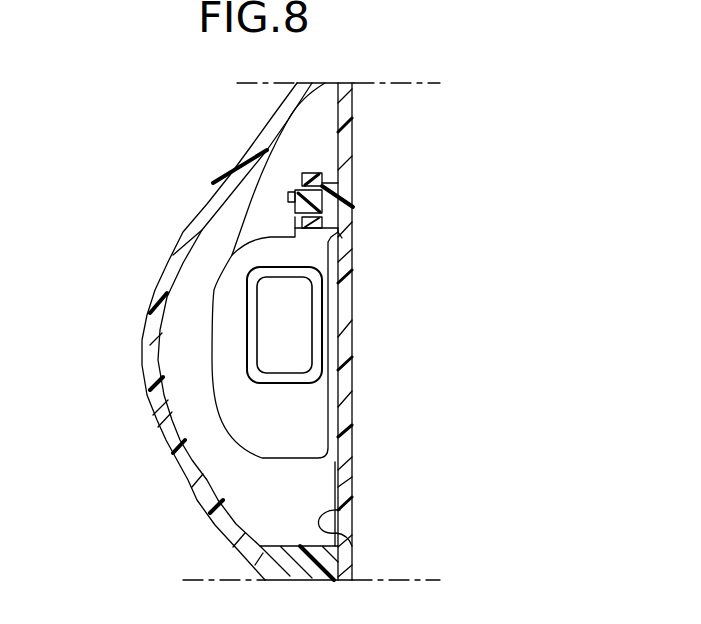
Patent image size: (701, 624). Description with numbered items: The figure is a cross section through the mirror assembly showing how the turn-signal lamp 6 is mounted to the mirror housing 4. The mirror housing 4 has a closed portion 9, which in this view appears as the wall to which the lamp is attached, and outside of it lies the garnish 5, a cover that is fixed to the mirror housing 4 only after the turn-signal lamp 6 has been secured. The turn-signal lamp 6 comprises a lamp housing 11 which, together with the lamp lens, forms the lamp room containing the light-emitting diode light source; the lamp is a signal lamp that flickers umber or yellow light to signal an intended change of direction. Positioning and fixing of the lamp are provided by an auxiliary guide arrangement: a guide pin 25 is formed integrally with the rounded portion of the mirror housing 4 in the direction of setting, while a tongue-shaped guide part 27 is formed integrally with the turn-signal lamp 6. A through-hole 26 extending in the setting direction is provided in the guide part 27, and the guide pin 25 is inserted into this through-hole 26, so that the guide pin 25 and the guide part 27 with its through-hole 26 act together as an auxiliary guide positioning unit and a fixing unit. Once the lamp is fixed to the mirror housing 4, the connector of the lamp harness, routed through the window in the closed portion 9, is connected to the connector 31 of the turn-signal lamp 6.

The mirror housing 4 is at (362, 487).
The garnish 5 is at (158, 443).
The turn-signal lamp 6 is at (192, 342).
The closed portion 9 is at (338, 531).
The lamp housing 11 is at (215, 383).
The guide pin 25 is at (295, 206).
The through-hole 26 is at (292, 195).
The guide part 27 is at (312, 173).
The connector 31 is at (247, 290).